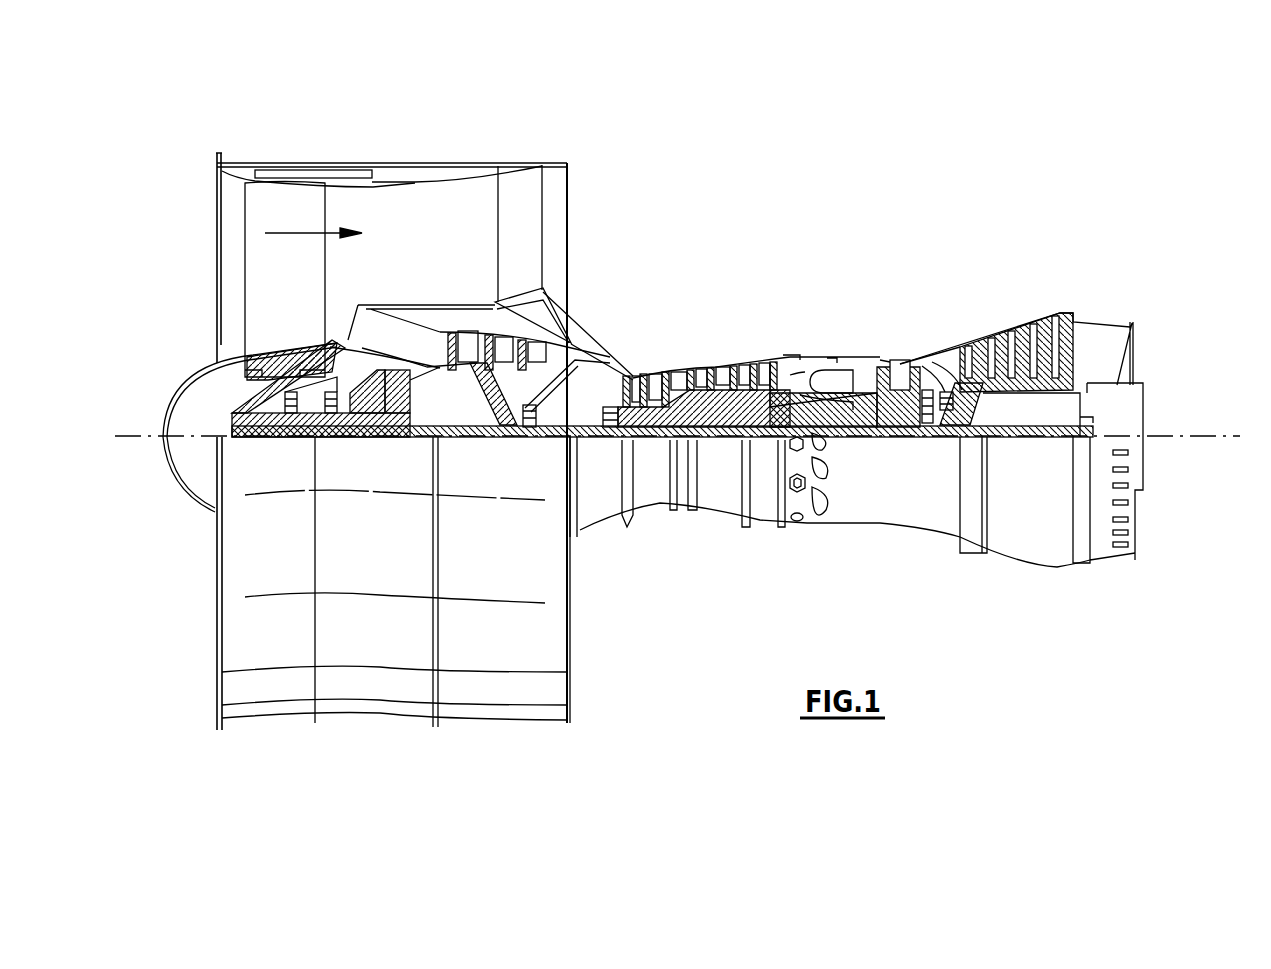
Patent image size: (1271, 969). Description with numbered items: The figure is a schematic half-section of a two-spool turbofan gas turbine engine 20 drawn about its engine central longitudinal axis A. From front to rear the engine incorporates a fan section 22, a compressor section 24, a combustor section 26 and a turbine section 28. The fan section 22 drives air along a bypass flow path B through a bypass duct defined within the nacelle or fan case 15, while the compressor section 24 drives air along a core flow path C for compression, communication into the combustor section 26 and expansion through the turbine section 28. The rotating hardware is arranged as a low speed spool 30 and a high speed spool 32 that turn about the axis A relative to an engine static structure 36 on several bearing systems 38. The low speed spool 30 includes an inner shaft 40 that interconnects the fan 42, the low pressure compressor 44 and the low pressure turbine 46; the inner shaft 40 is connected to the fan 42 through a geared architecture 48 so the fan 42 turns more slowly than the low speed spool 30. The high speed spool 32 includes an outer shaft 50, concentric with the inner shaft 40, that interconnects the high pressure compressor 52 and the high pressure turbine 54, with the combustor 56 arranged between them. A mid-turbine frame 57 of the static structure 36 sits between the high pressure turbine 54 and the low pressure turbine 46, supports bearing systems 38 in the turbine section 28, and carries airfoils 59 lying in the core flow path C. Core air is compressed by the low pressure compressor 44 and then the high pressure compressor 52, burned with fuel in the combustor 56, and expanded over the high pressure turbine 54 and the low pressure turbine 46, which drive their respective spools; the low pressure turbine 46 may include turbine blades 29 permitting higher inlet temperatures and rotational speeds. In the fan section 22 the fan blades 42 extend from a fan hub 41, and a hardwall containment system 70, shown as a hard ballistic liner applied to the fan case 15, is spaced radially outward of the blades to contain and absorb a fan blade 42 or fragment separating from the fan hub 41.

The nacelle / fan case 15 is at (396, 170).
The gas turbine engine 20 is at (842, 208).
The fan section 22 is at (324, 154).
The compressor section 24 is at (620, 345).
The combustor section 26 is at (835, 333).
The turbine section 28 is at (980, 298).
The turbine blade 29 is at (1050, 340).
The low speed spool 30 is at (723, 447).
The high speed spool 32 is at (763, 410).
The engine static structure 36 is at (760, 525).
The bearing systems 38 is at (528, 422).
The inner shaft 40 is at (593, 455).
The fan hub 41 is at (240, 395).
The fan 42 is at (297, 286).
The low pressure compressor 44 is at (497, 350).
The low pressure turbine 46 is at (1022, 337).
The geared architecture 48 is at (394, 420).
The outer shaft 50 is at (843, 420).
The high pressure compressor 52 is at (693, 400).
The high pressure turbine 54 is at (900, 362).
The combustor 56 is at (835, 375).
The mid-turbine frame 57 is at (942, 347).
The airfoils 59 is at (963, 397).
The hardwall containment system 70 is at (342, 170).
The engine central longitudinal axis A is at (1227, 437).
The bypass flow path B is at (300, 233).
The core flow path C is at (398, 338).